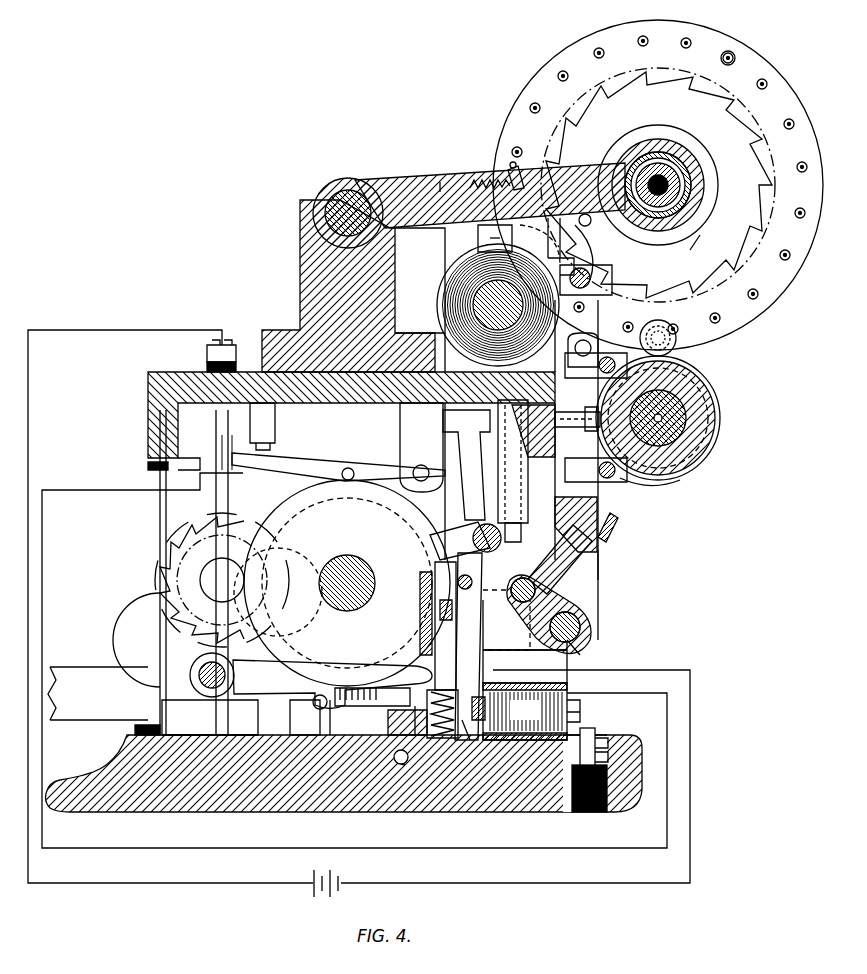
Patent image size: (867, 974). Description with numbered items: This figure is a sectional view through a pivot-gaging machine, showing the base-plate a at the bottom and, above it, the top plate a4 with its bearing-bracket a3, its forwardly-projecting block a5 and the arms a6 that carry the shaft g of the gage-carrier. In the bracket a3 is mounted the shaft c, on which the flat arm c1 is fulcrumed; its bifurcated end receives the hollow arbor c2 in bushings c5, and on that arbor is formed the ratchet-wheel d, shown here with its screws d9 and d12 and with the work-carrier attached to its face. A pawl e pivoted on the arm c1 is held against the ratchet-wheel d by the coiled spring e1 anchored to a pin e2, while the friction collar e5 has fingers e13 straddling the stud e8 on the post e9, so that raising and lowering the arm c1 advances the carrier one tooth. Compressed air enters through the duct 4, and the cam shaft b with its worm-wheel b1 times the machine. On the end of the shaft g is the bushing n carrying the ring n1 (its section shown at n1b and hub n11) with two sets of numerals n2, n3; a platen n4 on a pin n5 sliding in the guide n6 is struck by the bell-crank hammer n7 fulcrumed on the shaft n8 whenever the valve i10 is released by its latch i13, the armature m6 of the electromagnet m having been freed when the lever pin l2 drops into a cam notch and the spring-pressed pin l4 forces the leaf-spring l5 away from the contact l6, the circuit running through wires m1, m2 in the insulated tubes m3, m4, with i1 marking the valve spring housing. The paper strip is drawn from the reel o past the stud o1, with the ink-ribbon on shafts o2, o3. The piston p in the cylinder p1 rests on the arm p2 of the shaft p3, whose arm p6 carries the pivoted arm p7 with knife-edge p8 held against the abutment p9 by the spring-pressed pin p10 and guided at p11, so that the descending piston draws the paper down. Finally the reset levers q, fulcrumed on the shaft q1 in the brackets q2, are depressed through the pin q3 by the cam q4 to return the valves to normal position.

The base-plate a is at (324, 812).
The bearing-bracket a3 is at (305, 300).
The top plate a4 is at (160, 385).
The forwardly-projecting extension or block a5 is at (428, 263).
The arm a6 is at (521, 440).
The duct 4 is at (407, 772).
The shaft b is at (347, 556).
The worm-wheel b1 is at (378, 709).
The shaft c is at (469, 202).
The flat plate or arm c1 is at (434, 176).
The hollow shaft or arbor c2 is at (676, 185).
The bushings c5 is at (692, 206).
The ratchet-wheel d is at (722, 112).
The disc screws d9 is at (745, 56).
The disc screw d12 is at (735, 52).
The pawl e is at (495, 238).
The coiled spring e1 is at (490, 178).
The pin e2 is at (512, 162).
The collar e5 is at (700, 251).
The stud e8 is at (588, 205).
The post e9 is at (612, 282).
The pawl arm e13 is at (601, 265).
The shaft g is at (714, 410).
The spring housing i1 is at (438, 740).
The valve i10 is at (430, 570).
The latch i13 is at (470, 636).
The pin l2 is at (348, 466).
The spring-pressed pin l4 is at (272, 447).
The leaf-spring l5 is at (174, 460).
The contact l6 is at (233, 446).
The electromagnet m is at (531, 670).
The wire m1 is at (28, 383).
The wire m2 is at (42, 537).
The insulated tube m3 is at (107, 572).
The insulated tube m4 is at (216, 497).
The armature m6 is at (470, 740).
The bushing n is at (716, 428).
The ring n1 is at (716, 455).
The gear pin n1b is at (575, 391).
The numerals n2 is at (703, 472).
The numerals n3 is at (676, 485).
The platen n4 is at (678, 345).
The pin n5 is at (466, 465).
The guide n6 is at (577, 425).
The hammer n7 is at (421, 447).
The shaft n8 is at (478, 534).
The roller pin n11 is at (659, 320).
The reel o is at (472, 305).
The stud o1 is at (594, 334).
The shaft o2 is at (611, 481).
The shaft o3 is at (601, 355).
The piston p is at (502, 542).
The cylinder p1 is at (526, 470).
The inwardly-projecting arm p2 is at (531, 653).
The shaft p3 is at (598, 628).
The arm p6 is at (590, 610).
The arm p7 is at (596, 545).
The sharpened transverse edge p8 is at (616, 530).
The abutment p9 is at (598, 500).
The spring-pressed pin p10 is at (550, 596).
The pawl guide p11 is at (606, 589).
The lever q is at (280, 690).
The shaft q1 is at (212, 698).
The bearing-bracket q2 is at (238, 735).
The pin q3 is at (308, 715).
The cam q4 is at (298, 513).